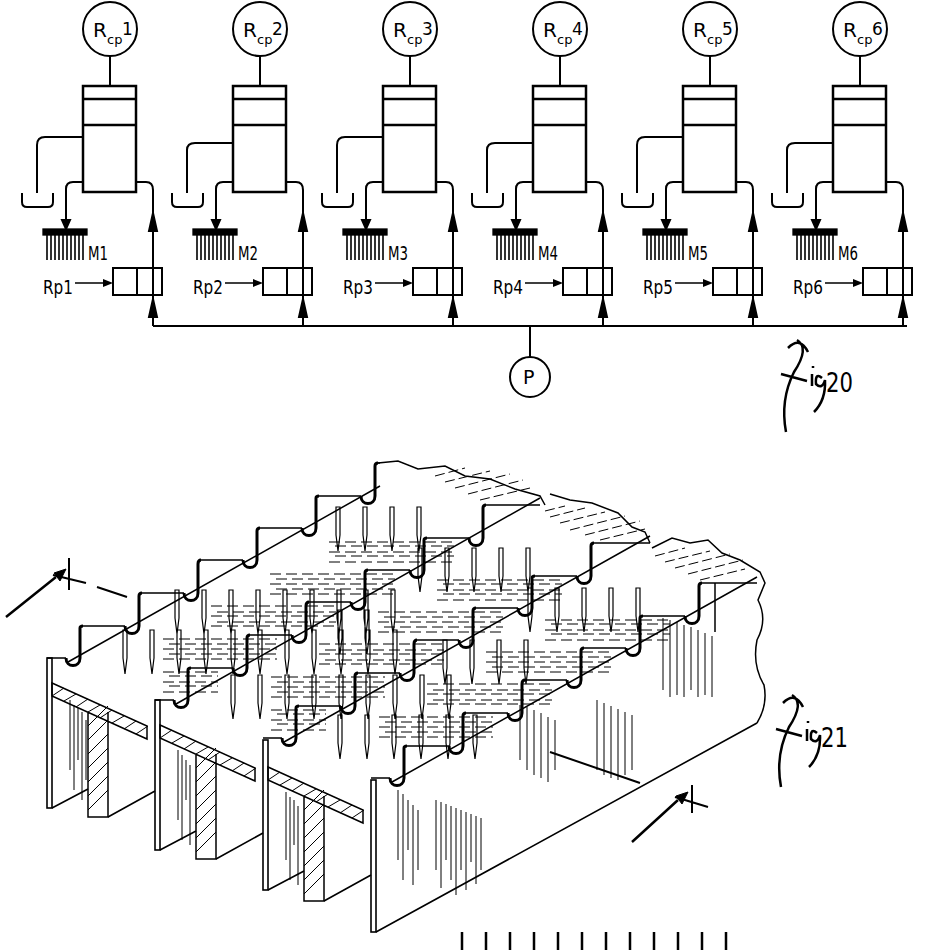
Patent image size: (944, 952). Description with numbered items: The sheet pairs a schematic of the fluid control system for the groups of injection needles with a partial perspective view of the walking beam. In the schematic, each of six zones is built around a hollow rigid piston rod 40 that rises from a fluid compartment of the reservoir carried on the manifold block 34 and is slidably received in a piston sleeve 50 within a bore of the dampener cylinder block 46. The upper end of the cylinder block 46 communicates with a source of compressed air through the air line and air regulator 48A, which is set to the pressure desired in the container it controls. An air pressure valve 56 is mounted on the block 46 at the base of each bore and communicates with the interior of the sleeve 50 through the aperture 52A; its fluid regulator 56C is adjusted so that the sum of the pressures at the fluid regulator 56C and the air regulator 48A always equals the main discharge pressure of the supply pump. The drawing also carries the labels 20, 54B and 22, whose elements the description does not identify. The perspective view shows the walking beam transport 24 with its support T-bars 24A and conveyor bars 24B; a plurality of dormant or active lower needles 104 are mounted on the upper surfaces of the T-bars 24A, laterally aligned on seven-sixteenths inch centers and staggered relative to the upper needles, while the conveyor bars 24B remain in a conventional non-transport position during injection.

In FIG. 20, the ink applicator brush 20 is at (47, 250).
In FIG. 20, the manifold block 34 is at (82, 230).
In FIG. 20, the hollow rigid piston rod 40 is at (68, 190).
In FIG. 20, the dampener cylinder block 46 is at (236, 90).
In FIG. 20, the air line and air regulator 48A is at (260, 72).
In FIG. 20, the piston sleeve 50 is at (236, 112).
In FIG. 20, the aperture 52A is at (148, 182).
In FIG. 20, the overflow line 54B is at (50, 137).
In FIG. 20, the air pressure valve 56 is at (125, 297).
In FIG. 20, the fluid pressure regulator 56C is at (152, 327).
In FIG. 21, the lower needles 104 is at (251, 557).
In FIG. 21, the walking beam transport 24 is at (297, 508).
In FIG. 21, the support T-bars 24A is at (200, 853).
In FIG. 21, the conveyor bars 24B is at (267, 870).
In FIG. 21, the section line 22- 22 is at (357, 703).